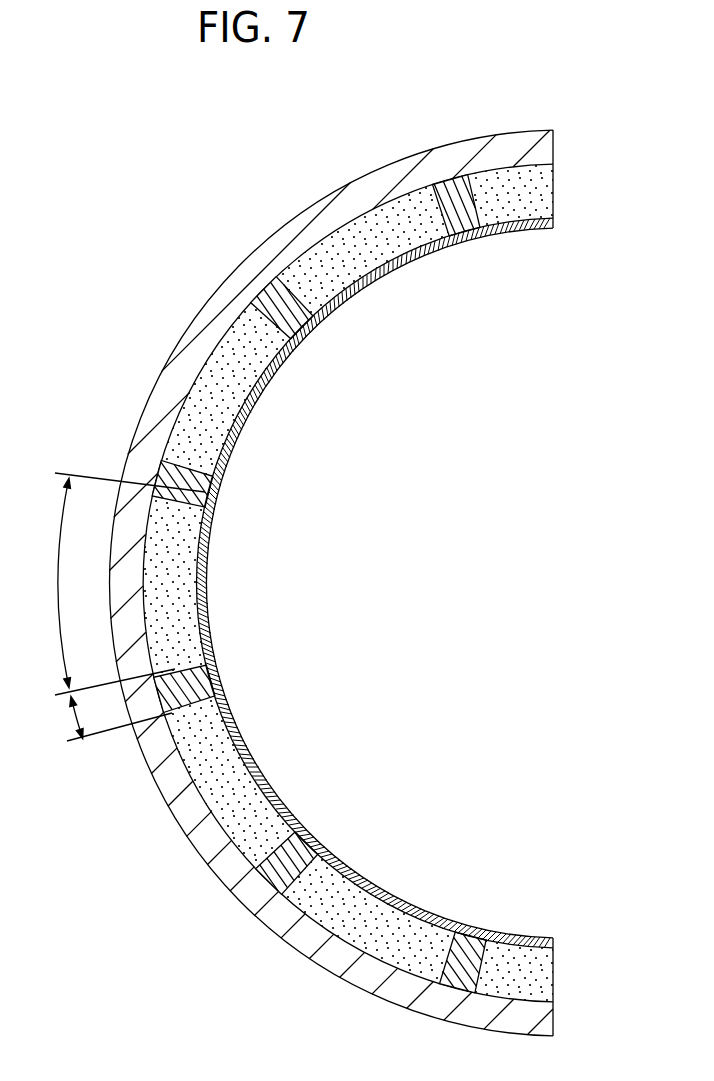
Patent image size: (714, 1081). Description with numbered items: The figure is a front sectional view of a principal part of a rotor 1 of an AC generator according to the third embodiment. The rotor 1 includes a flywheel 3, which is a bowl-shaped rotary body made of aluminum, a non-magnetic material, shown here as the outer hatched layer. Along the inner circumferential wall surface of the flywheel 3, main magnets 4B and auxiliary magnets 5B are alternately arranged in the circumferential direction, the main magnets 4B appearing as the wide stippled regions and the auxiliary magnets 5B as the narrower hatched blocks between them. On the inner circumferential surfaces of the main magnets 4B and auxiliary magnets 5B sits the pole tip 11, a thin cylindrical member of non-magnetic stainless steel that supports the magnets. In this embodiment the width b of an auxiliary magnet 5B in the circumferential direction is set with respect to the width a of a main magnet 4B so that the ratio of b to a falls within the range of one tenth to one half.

The rotor 1 is at (558, 178).
The flywheel 3 is at (382, 187).
The main magnet 4B is at (372, 262).
The auxiliary magnet 5B is at (465, 229).
The pole tip 11 is at (519, 228).
The width of main magnet a is at (118, 584).
The width of auxiliary magnet b is at (111, 718).